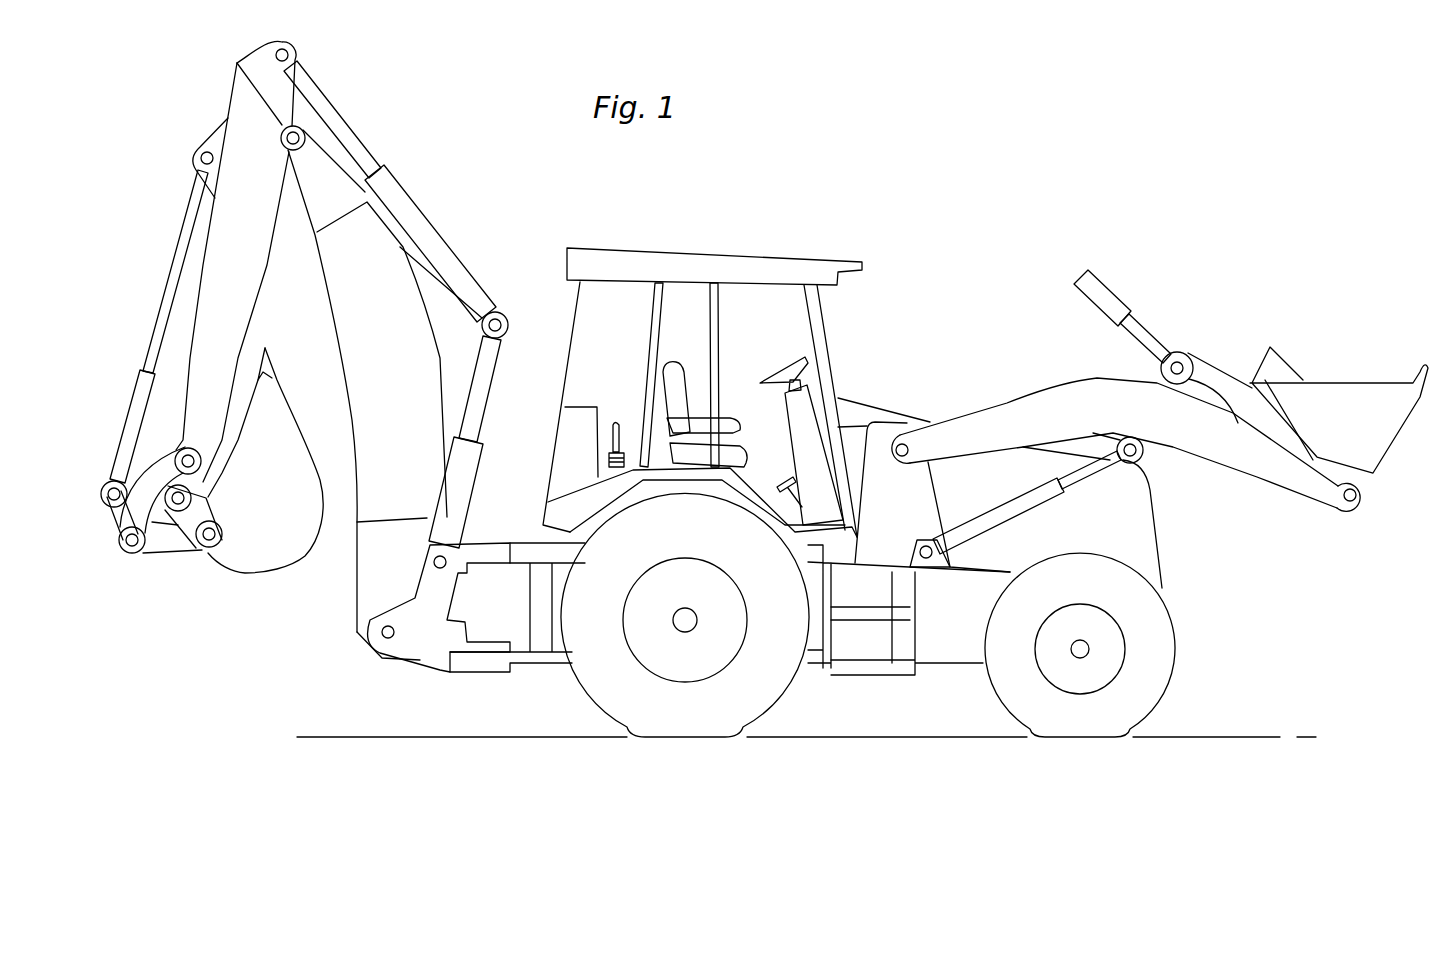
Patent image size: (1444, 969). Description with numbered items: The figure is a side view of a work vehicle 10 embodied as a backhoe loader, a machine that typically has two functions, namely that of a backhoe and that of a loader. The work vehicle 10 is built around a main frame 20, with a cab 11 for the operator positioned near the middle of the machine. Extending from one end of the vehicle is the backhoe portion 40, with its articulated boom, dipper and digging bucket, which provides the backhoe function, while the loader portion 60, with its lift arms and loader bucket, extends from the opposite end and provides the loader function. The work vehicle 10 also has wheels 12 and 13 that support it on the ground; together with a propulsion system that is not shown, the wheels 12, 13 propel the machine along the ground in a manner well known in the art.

The work vehicle 10 is at (772, 177).
The cab 11 is at (763, 307).
The wheels 12 is at (1172, 703).
The wheels 13 is at (790, 707).
The main frame 20 is at (895, 687).
The backhoe portion 40 is at (318, 632).
The loader portion 60 is at (995, 303).